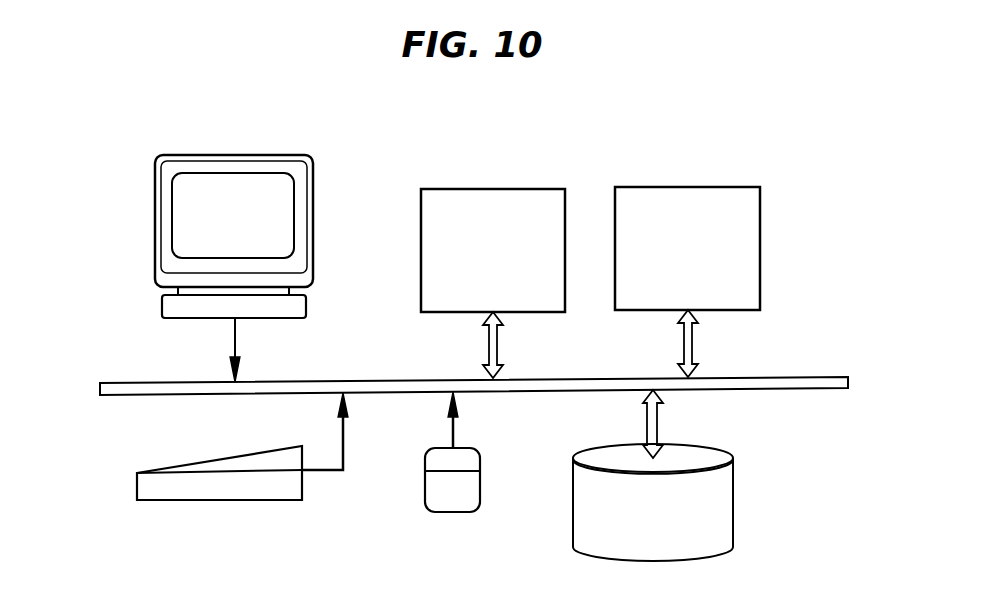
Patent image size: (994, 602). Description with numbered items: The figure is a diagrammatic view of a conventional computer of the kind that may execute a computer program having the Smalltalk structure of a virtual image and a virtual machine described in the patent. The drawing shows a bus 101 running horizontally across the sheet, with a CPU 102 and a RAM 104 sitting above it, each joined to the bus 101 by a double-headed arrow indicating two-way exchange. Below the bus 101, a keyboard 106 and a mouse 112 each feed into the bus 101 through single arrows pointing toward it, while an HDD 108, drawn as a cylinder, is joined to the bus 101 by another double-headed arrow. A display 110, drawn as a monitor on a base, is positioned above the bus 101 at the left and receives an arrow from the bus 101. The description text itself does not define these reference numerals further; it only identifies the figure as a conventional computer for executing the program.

The bus 101 is at (800, 377).
The CPU 102 is at (497, 188).
The RAM 104 is at (687, 186).
The keyboard 106 is at (137, 487).
The HDD 108 is at (734, 490).
The display 110 is at (258, 154).
The mouse 112 is at (426, 488).